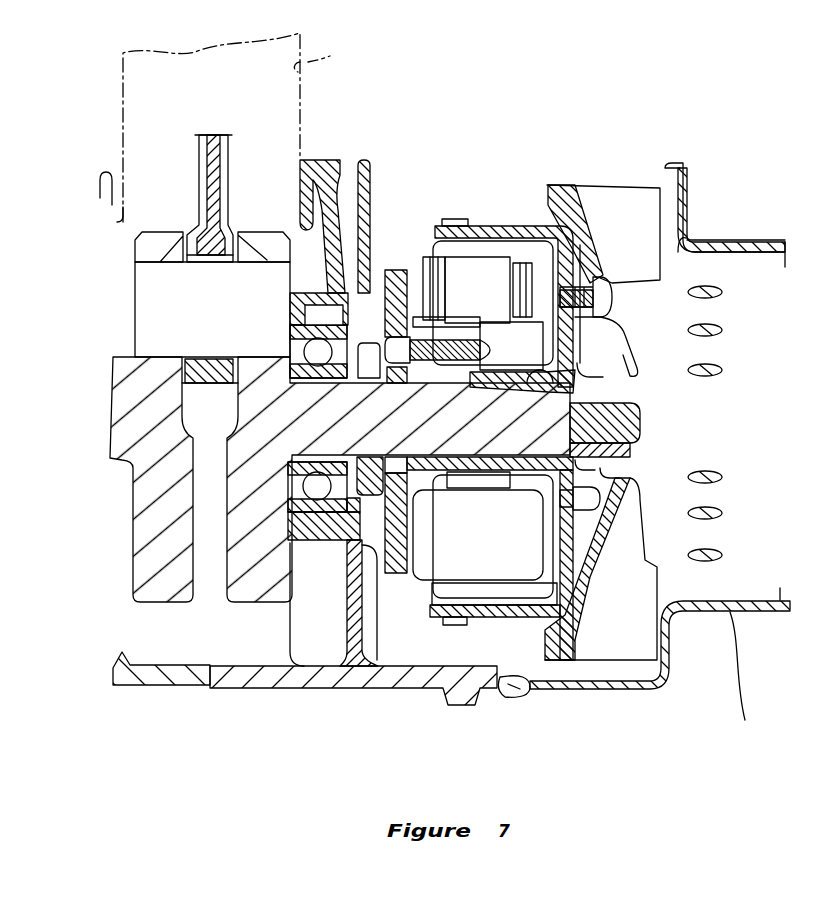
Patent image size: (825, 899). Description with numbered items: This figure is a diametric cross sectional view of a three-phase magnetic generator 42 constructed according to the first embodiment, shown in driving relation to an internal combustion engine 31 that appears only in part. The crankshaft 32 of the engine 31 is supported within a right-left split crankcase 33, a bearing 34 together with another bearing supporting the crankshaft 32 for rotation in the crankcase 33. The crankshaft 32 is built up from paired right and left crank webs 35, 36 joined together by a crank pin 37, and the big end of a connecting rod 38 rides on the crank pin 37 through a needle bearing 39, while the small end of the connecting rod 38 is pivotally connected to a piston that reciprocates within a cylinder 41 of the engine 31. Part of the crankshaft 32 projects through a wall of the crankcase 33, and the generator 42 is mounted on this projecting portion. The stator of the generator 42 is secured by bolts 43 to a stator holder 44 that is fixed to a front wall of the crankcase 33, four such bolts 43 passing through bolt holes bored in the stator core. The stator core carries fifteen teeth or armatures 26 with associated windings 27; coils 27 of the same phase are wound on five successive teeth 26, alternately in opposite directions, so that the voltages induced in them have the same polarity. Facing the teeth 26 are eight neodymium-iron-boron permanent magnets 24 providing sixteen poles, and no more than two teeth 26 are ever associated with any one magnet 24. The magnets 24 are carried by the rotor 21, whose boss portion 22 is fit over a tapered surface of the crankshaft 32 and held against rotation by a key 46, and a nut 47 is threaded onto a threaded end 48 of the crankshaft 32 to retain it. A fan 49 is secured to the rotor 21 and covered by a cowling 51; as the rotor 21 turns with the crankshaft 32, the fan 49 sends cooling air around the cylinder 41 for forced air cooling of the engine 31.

The rotor 21 is at (438, 235).
The boss portion 22 is at (560, 378).
The permanent magnets 24 is at (488, 600).
The teeth 26 is at (482, 280).
The windings 27 is at (423, 250).
The internal combustion engine 31 is at (95, 600).
The crankshaft 32 is at (170, 280).
The crankcase 33 is at (282, 672).
The bearing 34 is at (297, 495).
The right crank web 35 is at (130, 540).
The left crank web 36 is at (230, 598).
The crank pin 37 is at (148, 305).
The connecting rod 38 is at (228, 160).
The needle bearing 39 is at (200, 355).
The cylinder 41 is at (340, 50).
The three-phase magnetic generator 42 is at (565, 168).
The bolts 43 is at (485, 345).
The stator holder 44 is at (328, 550).
The key 46 is at (583, 470).
The nut 47 is at (622, 455).
The threaded end 48 is at (640, 422).
The fan 49 is at (622, 660).
The cowling 51 is at (755, 665).